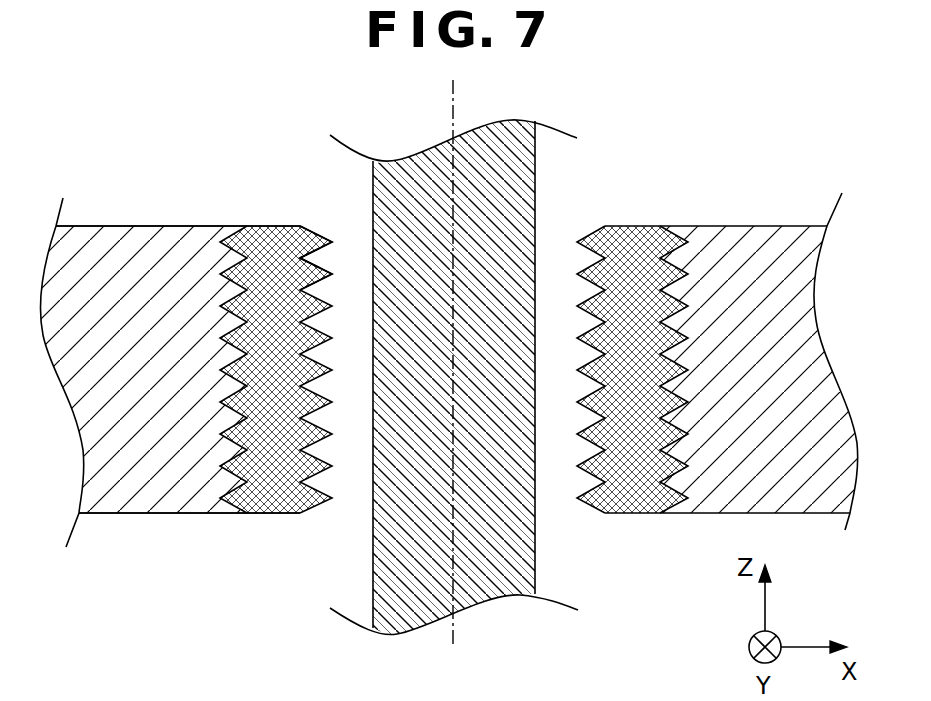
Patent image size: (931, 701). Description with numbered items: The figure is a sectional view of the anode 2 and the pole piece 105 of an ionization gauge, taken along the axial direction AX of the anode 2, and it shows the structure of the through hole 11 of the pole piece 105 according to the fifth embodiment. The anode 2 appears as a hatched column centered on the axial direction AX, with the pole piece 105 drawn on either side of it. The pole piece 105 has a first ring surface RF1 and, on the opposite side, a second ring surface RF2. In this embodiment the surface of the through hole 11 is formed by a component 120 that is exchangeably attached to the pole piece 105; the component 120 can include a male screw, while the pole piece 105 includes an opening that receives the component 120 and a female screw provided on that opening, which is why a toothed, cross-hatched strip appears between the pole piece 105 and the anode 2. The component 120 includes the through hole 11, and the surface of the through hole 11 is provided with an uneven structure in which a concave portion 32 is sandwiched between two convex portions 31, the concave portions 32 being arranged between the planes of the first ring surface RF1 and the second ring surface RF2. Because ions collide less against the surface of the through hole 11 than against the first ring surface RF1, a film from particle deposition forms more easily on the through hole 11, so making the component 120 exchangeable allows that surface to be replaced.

The anode 2 is at (372, 570).
The through hole 11 is at (558, 500).
The convex portion 31 is at (333, 242).
The concave portion 32 is at (301, 258).
The pole piece 105 is at (201, 394).
The component 120 is at (270, 513).
The axial direction AX is at (451, 113).
The first ring surface RF1 is at (142, 226).
The second ring surface RF2 is at (120, 513).